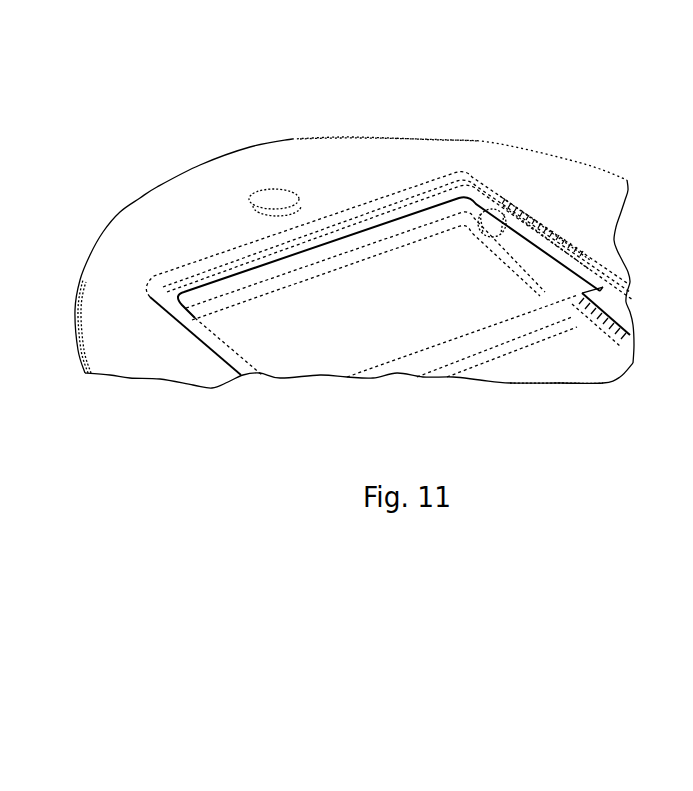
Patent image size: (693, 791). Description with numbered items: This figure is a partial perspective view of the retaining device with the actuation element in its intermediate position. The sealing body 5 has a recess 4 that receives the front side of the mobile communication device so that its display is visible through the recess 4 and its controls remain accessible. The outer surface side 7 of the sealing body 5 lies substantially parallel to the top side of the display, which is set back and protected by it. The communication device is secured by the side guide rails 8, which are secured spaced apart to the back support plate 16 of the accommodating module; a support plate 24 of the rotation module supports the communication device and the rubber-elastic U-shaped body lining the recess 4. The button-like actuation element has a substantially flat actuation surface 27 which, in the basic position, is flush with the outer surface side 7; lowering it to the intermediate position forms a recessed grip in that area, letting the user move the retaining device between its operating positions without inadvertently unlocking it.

The recess 4 is at (427, 231).
The sealing body 5 is at (147, 193).
The outer surface side 7 is at (378, 153).
The side guide rails 8 is at (624, 306).
The back support plate 16 is at (562, 357).
The support plate 24 is at (290, 333).
The actuation surface 27 is at (272, 203).